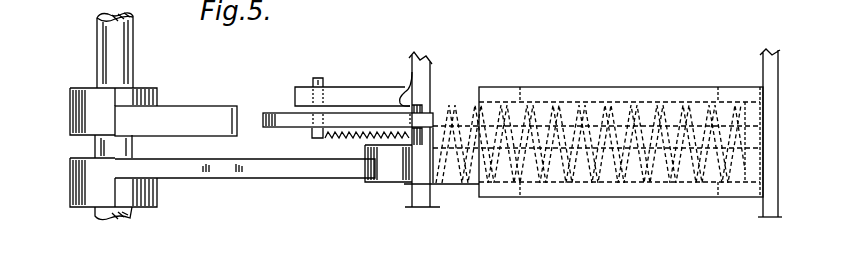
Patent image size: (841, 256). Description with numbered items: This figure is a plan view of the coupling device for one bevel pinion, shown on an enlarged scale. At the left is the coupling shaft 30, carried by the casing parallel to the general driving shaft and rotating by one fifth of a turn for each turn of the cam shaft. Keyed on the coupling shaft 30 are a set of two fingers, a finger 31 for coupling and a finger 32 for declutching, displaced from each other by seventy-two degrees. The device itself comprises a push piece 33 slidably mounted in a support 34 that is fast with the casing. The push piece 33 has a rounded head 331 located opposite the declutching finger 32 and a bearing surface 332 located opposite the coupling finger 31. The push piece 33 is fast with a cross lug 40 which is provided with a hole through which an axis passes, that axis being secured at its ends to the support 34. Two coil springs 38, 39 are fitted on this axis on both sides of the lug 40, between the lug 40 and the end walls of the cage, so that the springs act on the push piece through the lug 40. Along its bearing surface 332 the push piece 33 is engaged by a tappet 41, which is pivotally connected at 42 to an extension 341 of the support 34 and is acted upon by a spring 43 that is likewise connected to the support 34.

The coupling shaft 30 is at (127, 50).
The finger for coupling 31 is at (188, 115).
The finger for declutching 32 is at (220, 172).
The push piece 33 is at (434, 173).
The rounded head 331 is at (388, 173).
The bearing surface 332 is at (403, 86).
The support 34 is at (423, 73).
The extension of support 341 is at (340, 92).
The coil spring 38 is at (643, 110).
The coil spring 39 is at (545, 112).
The cross lug 40 is at (608, 183).
The tappet 41 is at (267, 112).
The pivot connection 42 is at (317, 82).
The spring 43 is at (342, 137).